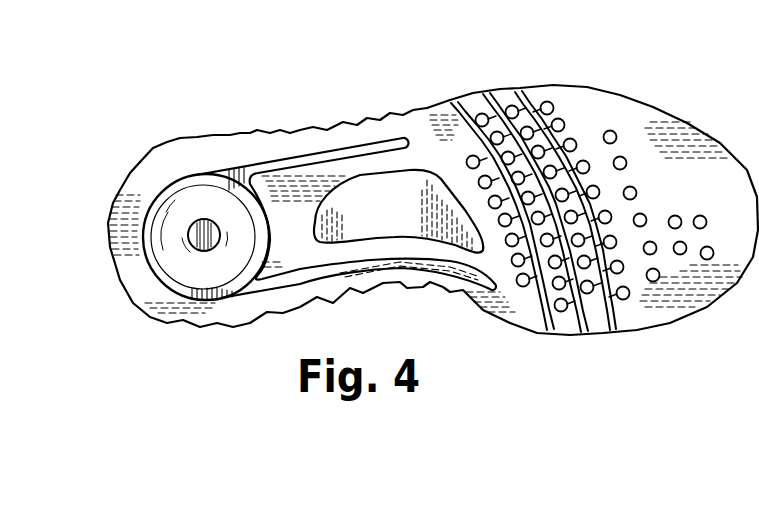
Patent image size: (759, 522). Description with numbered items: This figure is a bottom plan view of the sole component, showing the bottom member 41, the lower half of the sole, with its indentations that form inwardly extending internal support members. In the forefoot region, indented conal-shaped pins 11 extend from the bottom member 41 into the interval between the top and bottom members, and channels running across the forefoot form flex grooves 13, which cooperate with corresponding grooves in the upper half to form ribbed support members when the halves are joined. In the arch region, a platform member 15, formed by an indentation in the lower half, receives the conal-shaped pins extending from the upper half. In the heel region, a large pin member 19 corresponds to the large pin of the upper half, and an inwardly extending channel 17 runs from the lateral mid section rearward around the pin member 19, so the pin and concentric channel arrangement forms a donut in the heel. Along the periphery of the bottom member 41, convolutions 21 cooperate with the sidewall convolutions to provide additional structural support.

The conal-shaped pins 11 is at (609, 131).
The flex grooves 13 is at (513, 90).
The platform member 15 is at (410, 183).
The inwardly extending channel 17 is at (180, 176).
The pin member 19 is at (205, 219).
The convolutions 21 is at (390, 113).
The bottom member 41 is at (717, 143).